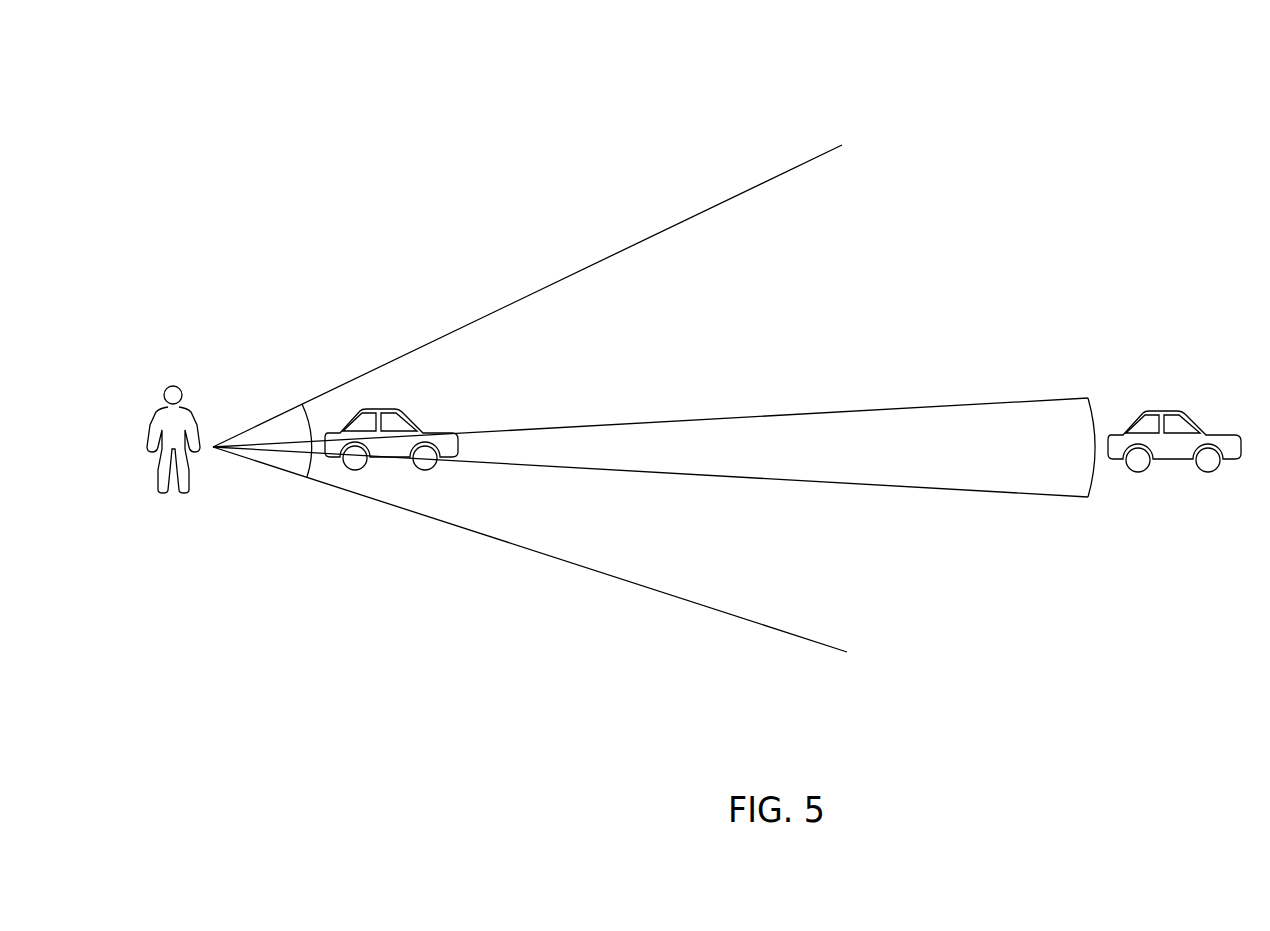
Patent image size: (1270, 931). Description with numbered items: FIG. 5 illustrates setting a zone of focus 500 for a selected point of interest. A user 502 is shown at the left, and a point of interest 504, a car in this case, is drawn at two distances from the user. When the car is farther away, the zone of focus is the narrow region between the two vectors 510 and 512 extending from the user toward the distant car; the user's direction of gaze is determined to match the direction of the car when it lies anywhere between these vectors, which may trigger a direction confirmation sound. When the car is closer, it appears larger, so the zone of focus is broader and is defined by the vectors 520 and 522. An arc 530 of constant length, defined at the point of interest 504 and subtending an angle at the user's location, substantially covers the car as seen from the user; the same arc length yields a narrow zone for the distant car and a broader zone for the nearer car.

The driving scene / field-of-view diagram 500 is at (1117, 112).
The user 502 is at (172, 387).
The point of interest 504 is at (436, 430).
The vector 510 is at (958, 404).
The vector 512 is at (935, 488).
The vector 520 is at (714, 203).
The vector 522 is at (707, 608).
The arc 530 is at (312, 428).